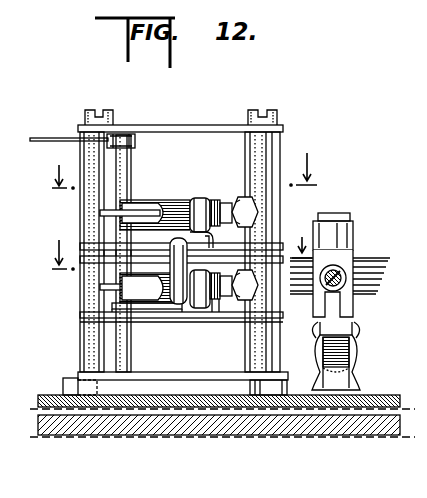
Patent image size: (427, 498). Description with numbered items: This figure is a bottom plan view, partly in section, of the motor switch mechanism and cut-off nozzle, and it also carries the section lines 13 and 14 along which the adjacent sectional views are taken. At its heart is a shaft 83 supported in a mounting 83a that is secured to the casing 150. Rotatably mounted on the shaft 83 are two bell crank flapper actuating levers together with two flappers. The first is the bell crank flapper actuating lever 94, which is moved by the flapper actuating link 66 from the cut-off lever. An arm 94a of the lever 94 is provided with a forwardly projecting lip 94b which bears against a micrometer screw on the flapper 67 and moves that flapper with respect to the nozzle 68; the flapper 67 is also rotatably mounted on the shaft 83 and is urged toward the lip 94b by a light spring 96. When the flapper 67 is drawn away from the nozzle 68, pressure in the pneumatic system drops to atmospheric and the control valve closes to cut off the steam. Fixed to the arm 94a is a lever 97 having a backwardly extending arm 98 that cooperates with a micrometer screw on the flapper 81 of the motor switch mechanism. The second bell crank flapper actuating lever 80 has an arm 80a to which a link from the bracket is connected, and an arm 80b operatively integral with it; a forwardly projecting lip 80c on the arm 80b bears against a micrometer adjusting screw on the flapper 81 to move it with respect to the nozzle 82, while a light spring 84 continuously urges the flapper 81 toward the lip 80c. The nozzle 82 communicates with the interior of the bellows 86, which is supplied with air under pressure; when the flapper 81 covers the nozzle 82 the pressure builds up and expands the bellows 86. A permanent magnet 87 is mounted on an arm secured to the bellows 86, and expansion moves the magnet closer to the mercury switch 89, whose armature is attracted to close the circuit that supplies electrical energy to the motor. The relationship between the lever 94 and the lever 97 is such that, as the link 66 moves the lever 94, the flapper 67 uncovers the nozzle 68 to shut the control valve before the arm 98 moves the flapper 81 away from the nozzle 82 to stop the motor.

The flapper actuating link 66 is at (48, 136).
The bell crank flapper actuating lever 94 is at (132, 142).
The shaft 83 is at (123, 176).
The mounting 83a is at (84, 352).
The arm of lever 94 94a is at (187, 233).
The forwardly projecting lip 94b is at (202, 198).
The light spring 96 is at (150, 208).
The flapper 67 is at (217, 200).
The nozzle 68 is at (248, 210).
The lever 97 is at (108, 246).
The light spring 84 is at (104, 287).
The bell crank flapper actuating lever 80 is at (122, 312).
The arm of lever 80 80a is at (146, 313).
The arm of lever 80 80b is at (137, 330).
The forwardly projecting lip 80c is at (205, 316).
The backwardly extending arm 98 is at (181, 318).
The flapper 81 is at (221, 304).
The nozzle 82 is at (250, 284).
The bellows 86 is at (372, 262).
The permanent magnet 87 is at (352, 298).
The mercury switch 89 is at (358, 353).
The casing 150 is at (166, 425).
The section line 13 is at (186, 178).
The section line 14 is at (171, 260).